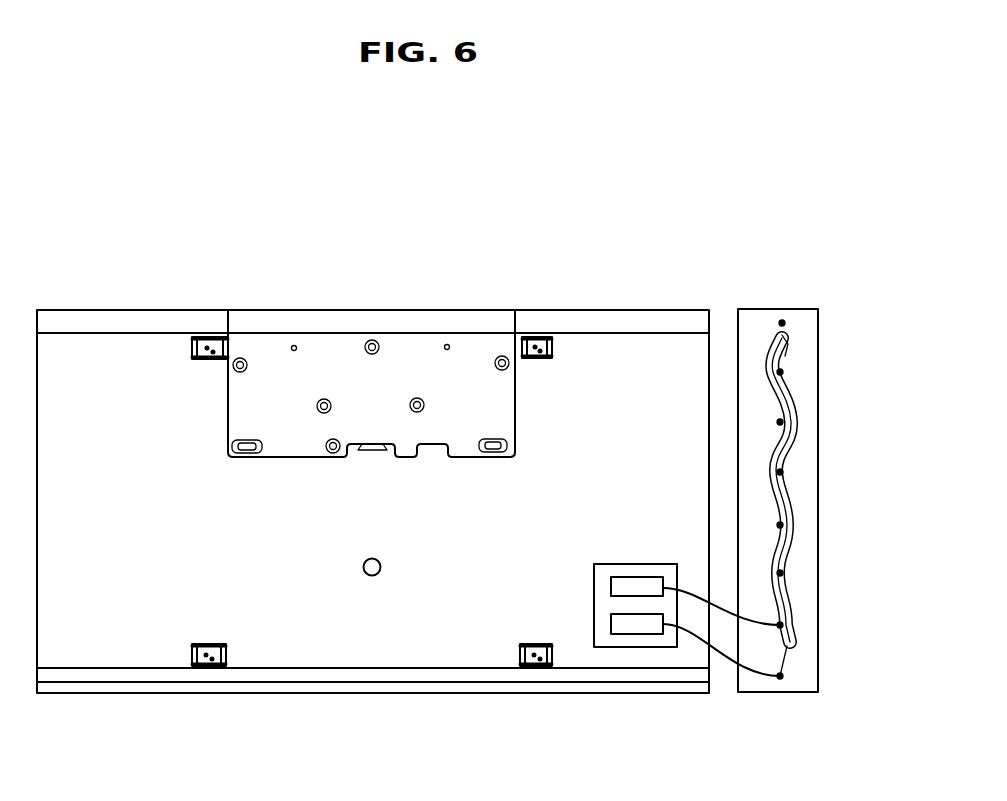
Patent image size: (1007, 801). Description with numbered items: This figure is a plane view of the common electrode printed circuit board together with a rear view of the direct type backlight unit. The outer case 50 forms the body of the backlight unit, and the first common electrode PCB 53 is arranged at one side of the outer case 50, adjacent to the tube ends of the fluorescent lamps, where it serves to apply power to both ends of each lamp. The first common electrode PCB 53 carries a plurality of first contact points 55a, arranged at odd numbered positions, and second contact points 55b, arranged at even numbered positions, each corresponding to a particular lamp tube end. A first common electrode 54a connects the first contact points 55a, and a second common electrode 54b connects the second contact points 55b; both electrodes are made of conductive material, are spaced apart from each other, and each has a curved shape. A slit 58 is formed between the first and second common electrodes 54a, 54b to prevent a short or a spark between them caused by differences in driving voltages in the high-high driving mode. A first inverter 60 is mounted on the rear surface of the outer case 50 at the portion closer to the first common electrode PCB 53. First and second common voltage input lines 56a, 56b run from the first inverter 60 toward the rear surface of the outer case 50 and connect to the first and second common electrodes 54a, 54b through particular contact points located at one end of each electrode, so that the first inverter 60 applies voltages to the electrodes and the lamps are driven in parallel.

The outer case 50 is at (142, 322).
The first common electrode PCB 53 is at (769, 315).
The first common electrode 54a is at (787, 343).
The second common electrode 54b is at (795, 417).
The first contact points 55a is at (782, 323).
The second contact points 55b is at (780, 372).
The first common voltage input line 56a is at (697, 587).
The second common voltage input line 56b is at (723, 656).
The slit 58 is at (787, 527).
The first inverter 60 is at (608, 565).